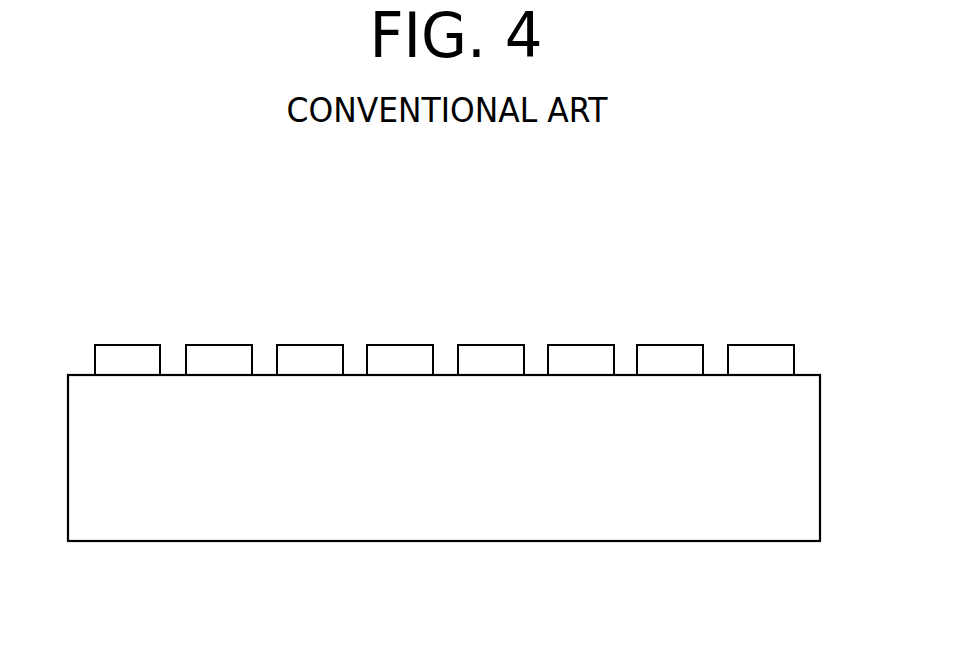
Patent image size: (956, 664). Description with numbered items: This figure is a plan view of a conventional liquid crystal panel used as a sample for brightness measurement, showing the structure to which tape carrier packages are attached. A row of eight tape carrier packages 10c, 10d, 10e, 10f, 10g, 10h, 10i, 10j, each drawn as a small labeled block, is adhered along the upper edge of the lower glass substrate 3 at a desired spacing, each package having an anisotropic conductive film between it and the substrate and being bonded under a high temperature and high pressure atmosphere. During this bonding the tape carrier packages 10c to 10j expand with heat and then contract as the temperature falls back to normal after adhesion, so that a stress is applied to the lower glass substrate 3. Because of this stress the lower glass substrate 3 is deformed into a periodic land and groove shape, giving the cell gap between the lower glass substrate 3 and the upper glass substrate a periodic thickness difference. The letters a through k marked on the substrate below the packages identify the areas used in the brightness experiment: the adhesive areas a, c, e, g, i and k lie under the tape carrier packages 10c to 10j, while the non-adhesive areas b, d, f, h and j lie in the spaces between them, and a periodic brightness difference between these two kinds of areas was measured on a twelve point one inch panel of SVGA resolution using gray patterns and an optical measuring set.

The lower glass substrate 3 is at (820, 456).
The tape carrier package 10c is at (126, 343).
The tape carrier package 10d is at (217, 343).
The tape carrier package 10e is at (308, 343).
The tape carrier package 10f is at (398, 343).
The tape carrier package 10g is at (488, 343).
The tape carrier package 10h is at (578, 343).
The tape carrier package 10i is at (667, 343).
The tape carrier package 10j is at (758, 343).